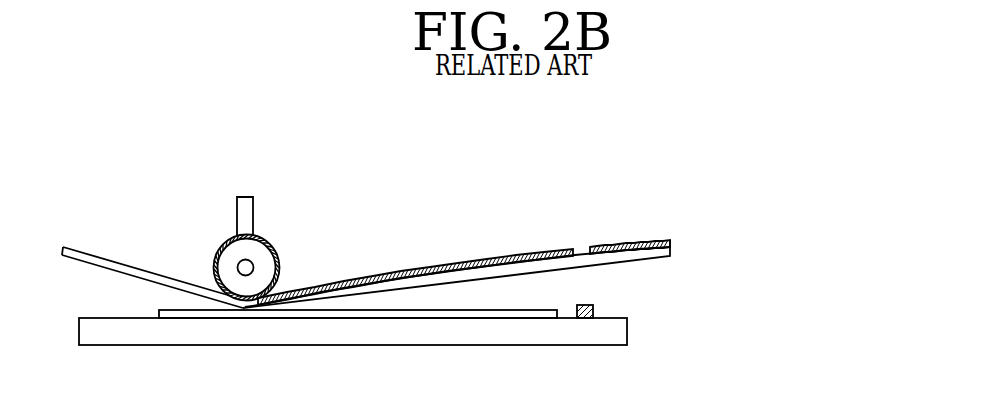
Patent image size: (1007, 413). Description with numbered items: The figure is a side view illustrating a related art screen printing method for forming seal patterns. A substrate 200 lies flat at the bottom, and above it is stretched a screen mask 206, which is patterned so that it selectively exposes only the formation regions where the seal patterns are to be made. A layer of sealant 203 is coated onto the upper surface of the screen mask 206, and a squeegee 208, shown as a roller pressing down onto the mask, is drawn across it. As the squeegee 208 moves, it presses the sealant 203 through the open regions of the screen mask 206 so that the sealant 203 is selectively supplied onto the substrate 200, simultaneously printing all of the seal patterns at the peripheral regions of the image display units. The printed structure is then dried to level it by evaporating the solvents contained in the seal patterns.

The squeegee 208 is at (257, 255).
The sealant 203 is at (635, 241).
The screen mask 206 is at (671, 248).
The substrate 200 is at (613, 335).